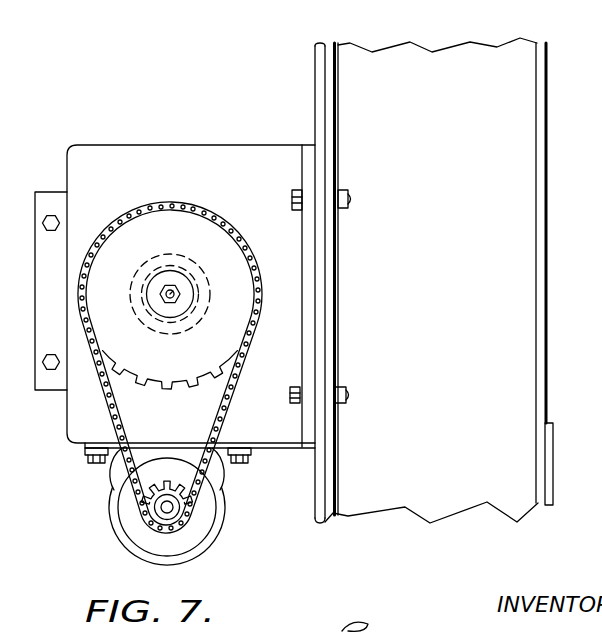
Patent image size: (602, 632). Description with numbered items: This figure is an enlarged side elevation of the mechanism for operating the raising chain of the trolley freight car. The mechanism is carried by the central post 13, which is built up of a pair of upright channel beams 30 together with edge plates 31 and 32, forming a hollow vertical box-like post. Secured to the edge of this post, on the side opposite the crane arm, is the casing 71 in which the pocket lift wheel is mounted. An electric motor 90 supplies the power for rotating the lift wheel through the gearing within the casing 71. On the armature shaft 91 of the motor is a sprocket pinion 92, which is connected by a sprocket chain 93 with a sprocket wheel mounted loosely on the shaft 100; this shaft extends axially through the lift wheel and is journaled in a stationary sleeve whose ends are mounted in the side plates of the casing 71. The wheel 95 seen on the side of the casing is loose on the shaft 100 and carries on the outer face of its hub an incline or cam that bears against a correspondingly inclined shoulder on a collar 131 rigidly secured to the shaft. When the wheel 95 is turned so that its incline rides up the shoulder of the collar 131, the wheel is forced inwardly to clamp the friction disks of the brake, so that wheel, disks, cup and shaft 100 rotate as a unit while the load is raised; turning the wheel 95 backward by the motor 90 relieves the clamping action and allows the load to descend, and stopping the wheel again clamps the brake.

The central post 13 is at (523, 273).
The upright channel beams 30 is at (431, 280).
The edge plate 31 is at (553, 467).
The edge plate 32 is at (318, 77).
The casing 71 is at (193, 304).
The electric motor 90 is at (128, 530).
The armature shaft 91 is at (175, 511).
The sprocket pinion 92 is at (140, 498).
The sprocket chain 93 is at (229, 415).
The wheel 95 is at (172, 321).
The shaft 100 is at (180, 289).
The collar 131 is at (172, 270).